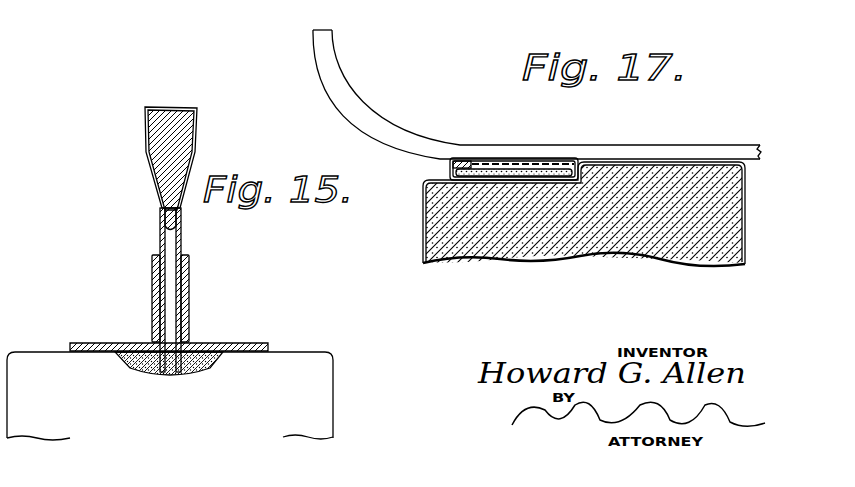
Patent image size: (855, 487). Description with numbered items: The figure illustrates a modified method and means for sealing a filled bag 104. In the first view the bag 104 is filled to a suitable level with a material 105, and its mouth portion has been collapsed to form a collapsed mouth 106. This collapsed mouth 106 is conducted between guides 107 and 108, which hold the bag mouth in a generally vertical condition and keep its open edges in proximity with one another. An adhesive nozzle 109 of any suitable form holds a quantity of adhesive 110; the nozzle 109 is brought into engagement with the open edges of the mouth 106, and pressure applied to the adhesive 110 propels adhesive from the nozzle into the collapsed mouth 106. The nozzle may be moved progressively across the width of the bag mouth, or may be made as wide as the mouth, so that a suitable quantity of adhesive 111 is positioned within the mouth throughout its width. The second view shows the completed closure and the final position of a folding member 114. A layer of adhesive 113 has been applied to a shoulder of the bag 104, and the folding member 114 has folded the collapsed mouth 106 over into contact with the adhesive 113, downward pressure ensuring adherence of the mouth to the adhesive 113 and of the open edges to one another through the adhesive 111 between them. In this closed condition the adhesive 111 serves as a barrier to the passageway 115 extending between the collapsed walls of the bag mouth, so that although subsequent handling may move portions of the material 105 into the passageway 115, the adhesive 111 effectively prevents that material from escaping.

In FIG. 15, the bag 104 is at (333, 385).
In FIG. 17, the bag 104 is at (423, 238).
In FIG. 15, the material 105 is at (170, 377).
In FIG. 17, the material 105 is at (557, 259).
In FIG. 15, the collapsed bag mouth 106 is at (181, 250).
In FIG. 17, the collapsed bag mouth 106 is at (480, 160).
In FIG. 15, the guide 107 is at (189, 300).
In FIG. 15, the guide 108 is at (152, 290).
In FIG. 15, the adhesive nozzle 109 is at (197, 132).
In FIG. 15, the adhesive 110 is at (182, 90).
In FIG. 15, the adhesive 111 is at (165, 223).
In FIG. 17, the adhesive 111 is at (452, 167).
In FIG. 17, the layer of adhesive 113 is at (516, 172).
In FIG. 17, the folding member 114 is at (530, 150).
In FIG. 17, the passageway 115 is at (493, 163).